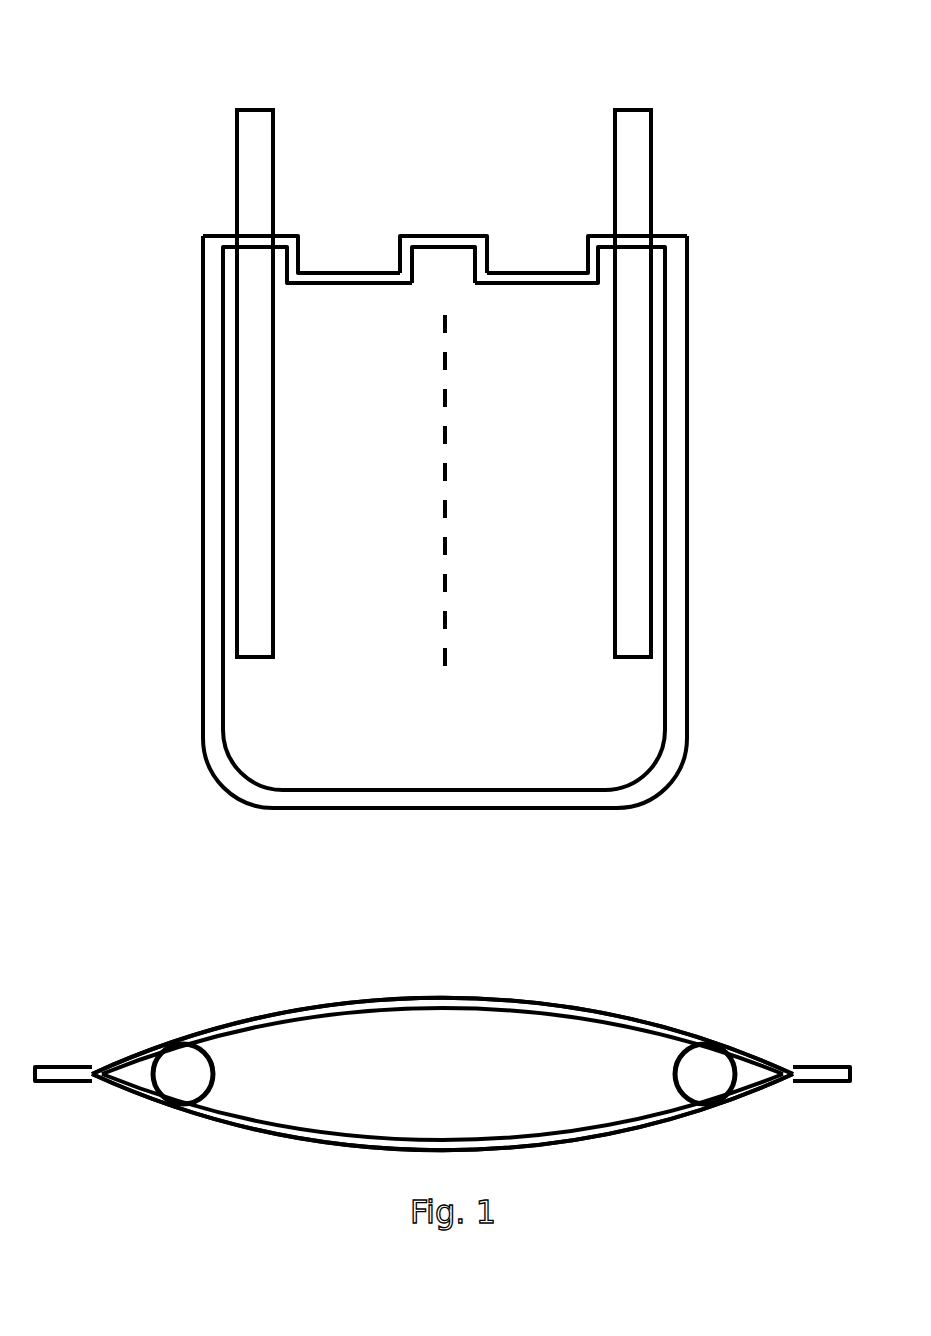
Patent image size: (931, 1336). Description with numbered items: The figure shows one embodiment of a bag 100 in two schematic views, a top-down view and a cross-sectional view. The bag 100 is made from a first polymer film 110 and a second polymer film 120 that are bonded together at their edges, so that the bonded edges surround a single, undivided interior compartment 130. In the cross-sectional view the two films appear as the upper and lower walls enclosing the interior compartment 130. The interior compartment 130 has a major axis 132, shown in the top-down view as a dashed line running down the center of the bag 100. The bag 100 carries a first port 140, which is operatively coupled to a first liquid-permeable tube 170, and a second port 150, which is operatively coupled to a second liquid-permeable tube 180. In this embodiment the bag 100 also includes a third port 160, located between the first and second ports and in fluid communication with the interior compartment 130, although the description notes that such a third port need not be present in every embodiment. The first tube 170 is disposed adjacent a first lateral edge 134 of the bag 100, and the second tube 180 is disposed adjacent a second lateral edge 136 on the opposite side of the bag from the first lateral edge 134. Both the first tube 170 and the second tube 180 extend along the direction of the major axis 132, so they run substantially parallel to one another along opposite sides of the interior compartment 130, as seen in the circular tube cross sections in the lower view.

The bag 100 is at (172, 92).
The first polymer film 110 is at (228, 1133).
The second polymer film 120 is at (350, 998).
The interior compartment 130 is at (460, 746).
The major axis 132 is at (438, 483).
The first lateral edge 134 is at (208, 463).
The second lateral edge 136 is at (673, 460).
The first port 140 is at (228, 230).
The second port 150 is at (655, 237).
The third port 160 is at (445, 233).
The first liquid-permeable tube 170 is at (255, 585).
The second liquid-permeable tube 180 is at (627, 629).